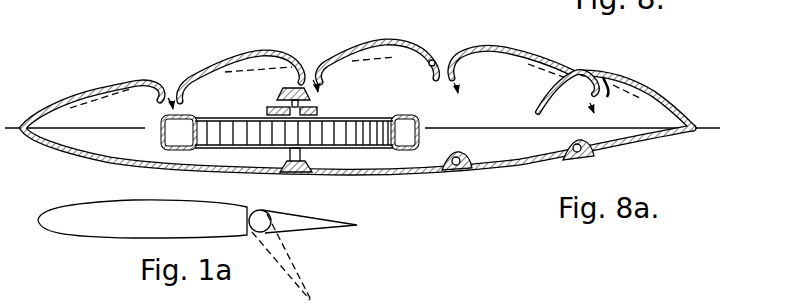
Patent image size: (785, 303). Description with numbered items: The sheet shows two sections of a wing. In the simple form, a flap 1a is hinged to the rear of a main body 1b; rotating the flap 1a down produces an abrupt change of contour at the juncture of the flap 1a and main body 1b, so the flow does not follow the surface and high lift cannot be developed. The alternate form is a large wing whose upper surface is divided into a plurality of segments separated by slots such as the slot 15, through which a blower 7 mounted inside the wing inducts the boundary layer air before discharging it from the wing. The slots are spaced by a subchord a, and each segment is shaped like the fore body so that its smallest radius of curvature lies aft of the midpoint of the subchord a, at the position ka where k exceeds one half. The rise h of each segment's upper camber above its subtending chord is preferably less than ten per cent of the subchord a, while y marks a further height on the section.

In FIG. 8A, the blower 7 is at (350, 133).
In FIG. 8A, the slot 15 is at (580, 68).
In FIG. 1A, the flap 1a is at (285, 258).
In FIG. 1A, the main body 1b is at (63, 230).
In FIG. 8A, the subchord a is at (299, 62).
In FIG. 8A, the fraction of subchord ka is at (239, 53).
In FIG. 8A, the rise of upper camber h is at (240, 74).
In FIG. 8A, the height dimension y is at (410, 40).